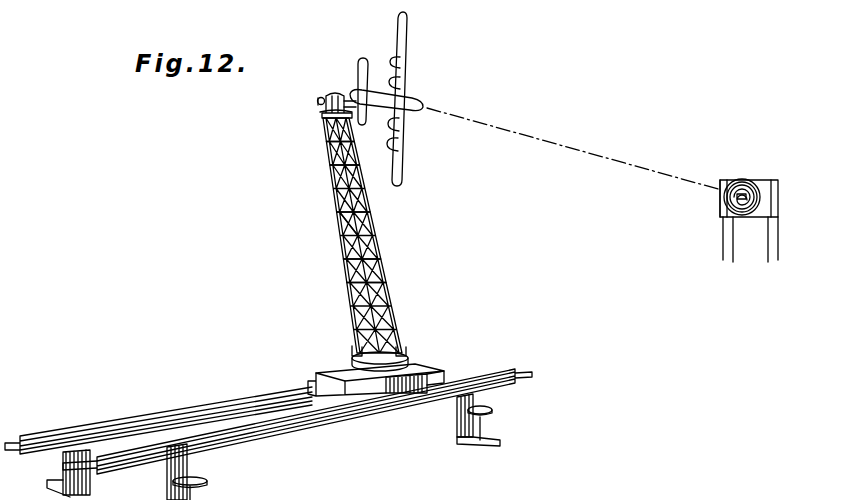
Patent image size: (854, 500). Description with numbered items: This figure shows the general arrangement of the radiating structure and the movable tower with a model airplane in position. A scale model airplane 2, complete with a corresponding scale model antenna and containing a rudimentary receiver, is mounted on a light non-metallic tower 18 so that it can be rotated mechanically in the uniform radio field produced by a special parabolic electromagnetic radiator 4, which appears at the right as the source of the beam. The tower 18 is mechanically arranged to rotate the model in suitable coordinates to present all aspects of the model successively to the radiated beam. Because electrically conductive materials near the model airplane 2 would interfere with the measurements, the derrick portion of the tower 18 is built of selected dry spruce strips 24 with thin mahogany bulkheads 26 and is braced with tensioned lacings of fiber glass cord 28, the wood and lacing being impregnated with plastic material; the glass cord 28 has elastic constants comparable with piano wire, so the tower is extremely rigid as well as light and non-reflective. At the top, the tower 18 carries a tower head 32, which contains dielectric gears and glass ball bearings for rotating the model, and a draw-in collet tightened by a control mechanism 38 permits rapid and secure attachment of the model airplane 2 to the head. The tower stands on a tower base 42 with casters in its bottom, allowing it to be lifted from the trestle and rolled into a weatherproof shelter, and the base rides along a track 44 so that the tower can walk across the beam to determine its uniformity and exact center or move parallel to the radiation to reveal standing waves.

The scale model airplane 2 is at (421, 107).
The parabolic electromagnetic radiator 4 is at (745, 180).
The tower 18 is at (392, 244).
The dry spruce strips 24 is at (345, 234).
The mahogany bulkheads 26 is at (333, 174).
The fiber glass cord lacings 28 is at (354, 289).
The tower head 32 is at (340, 97).
The control mechanism 38 is at (316, 101).
The tower base 42 is at (334, 372).
The track 44 is at (170, 417).